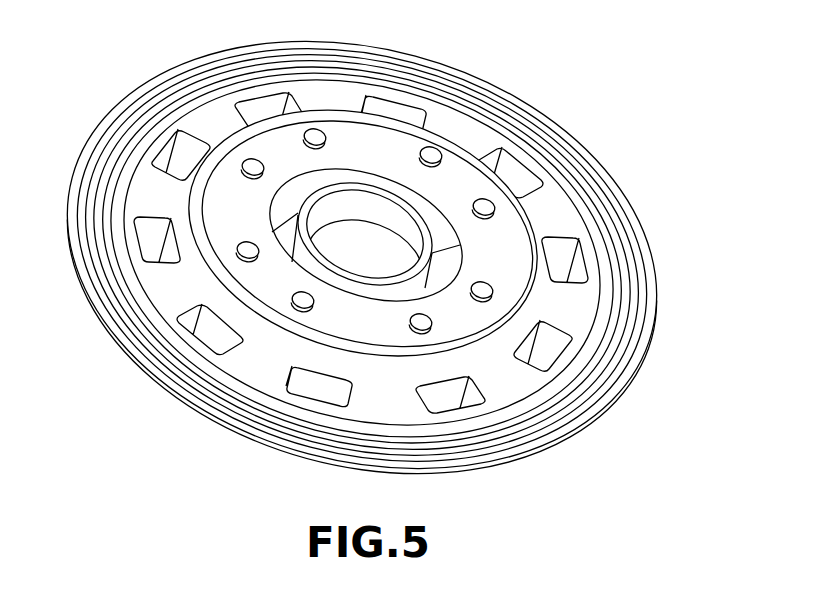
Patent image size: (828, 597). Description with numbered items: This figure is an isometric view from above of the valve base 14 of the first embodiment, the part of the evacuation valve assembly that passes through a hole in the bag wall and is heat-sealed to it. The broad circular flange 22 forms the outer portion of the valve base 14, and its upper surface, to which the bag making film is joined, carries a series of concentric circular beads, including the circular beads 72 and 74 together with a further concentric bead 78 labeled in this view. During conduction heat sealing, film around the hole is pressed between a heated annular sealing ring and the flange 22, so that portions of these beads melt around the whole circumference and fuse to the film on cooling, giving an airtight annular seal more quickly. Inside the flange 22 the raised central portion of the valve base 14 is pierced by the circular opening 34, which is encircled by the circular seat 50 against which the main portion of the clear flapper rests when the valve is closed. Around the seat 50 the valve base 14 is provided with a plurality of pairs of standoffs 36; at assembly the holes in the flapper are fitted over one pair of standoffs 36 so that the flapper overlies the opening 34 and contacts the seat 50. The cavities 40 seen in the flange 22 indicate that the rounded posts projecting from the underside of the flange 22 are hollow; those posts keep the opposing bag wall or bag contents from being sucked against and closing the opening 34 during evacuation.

The valve base 14 is at (194, 262).
The flange 22 is at (647, 355).
The opening 34 is at (397, 221).
The standoffs 36 is at (440, 146).
The cavities 40 is at (210, 341).
The seat 50 is at (430, 242).
The circular bead 72 is at (624, 213).
The circular bead 74 is at (614, 243).
The groove 78 is at (601, 313).